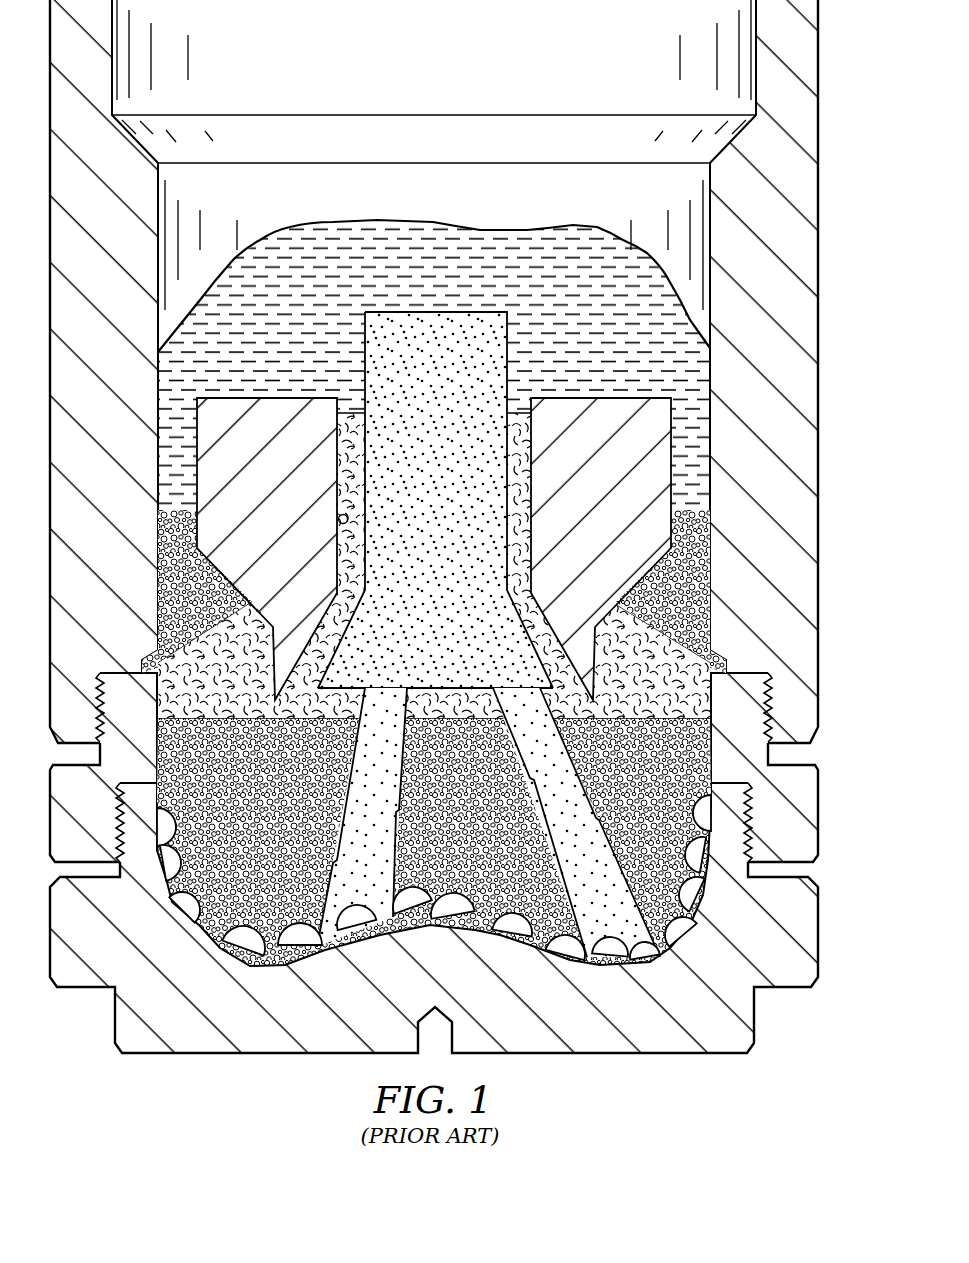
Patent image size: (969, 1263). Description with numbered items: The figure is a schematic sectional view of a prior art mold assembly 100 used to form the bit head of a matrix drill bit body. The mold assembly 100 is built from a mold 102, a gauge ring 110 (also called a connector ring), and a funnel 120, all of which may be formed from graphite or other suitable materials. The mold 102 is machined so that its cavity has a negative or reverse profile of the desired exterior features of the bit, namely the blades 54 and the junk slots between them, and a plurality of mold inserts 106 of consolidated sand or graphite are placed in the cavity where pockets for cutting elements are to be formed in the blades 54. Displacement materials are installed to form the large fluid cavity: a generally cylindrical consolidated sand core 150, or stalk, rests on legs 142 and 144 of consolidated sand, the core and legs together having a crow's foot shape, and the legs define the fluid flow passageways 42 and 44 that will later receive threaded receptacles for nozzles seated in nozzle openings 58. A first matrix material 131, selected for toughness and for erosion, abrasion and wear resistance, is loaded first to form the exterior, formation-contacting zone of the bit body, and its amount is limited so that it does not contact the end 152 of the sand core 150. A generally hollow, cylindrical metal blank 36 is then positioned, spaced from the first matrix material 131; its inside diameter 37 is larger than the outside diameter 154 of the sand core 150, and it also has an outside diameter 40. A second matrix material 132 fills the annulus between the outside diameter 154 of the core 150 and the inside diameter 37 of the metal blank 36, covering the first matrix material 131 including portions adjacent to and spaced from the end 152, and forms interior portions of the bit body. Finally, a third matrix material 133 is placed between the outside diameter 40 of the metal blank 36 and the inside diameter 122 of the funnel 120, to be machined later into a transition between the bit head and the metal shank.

The mold assembly 100 is at (466, 570).
The mold 102 is at (836, 948).
The gauge ring 110 is at (834, 797).
The funnel 120 is at (836, 251).
The inside diameter of funnel 122 is at (160, 207).
The consolidated sand core 150 is at (418, 404).
The end of sand core 152 is at (444, 692).
The outside diameter of sand core 154 is at (362, 482).
The metal blank 36 is at (588, 502).
The inside diameter of metal blank 37 is at (338, 520).
The outside diameter of metal blank 40 is at (195, 445).
The fluid flow passageway 42 is at (351, 777).
The fluid flow passageway 44 is at (550, 831).
The leg 142 is at (340, 890).
The leg 144 is at (595, 897).
The first matrix material 131 is at (228, 821).
The mold inserts 106 is at (198, 912).
The second matrix material 132 is at (733, 630).
The third matrix material 133 is at (707, 568).
The blades 54 is at (326, 951).
The nozzle openings 58 is at (150, 904).